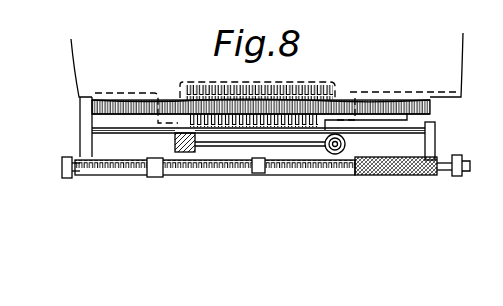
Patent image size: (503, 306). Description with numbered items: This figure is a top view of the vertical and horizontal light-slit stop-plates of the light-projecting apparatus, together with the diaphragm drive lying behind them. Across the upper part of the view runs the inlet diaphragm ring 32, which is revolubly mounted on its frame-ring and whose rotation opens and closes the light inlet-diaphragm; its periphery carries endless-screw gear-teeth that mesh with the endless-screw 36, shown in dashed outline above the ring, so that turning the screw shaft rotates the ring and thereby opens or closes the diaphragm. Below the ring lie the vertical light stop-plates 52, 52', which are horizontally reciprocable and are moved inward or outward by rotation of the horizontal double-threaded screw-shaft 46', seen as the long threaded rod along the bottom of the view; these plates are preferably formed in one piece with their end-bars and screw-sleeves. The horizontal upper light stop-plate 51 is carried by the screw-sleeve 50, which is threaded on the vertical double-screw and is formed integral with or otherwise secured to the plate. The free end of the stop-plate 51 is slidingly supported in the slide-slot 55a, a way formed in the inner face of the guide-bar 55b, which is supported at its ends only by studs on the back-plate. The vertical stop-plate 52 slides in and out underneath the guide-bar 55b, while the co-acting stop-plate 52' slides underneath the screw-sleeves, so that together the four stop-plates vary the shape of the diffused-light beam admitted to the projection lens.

The inlet diaphragm ring 32 is at (92, 113).
The endless-screw 36 is at (285, 90).
The vertical light stop-plate 52 is at (133, 142).
The vertical light stop-plate 52' is at (310, 143).
The guide-bar 55b is at (173, 140).
The horizontal upper light stop-plate 51 is at (248, 148).
The screw-sleeve 50 is at (335, 155).
The double-threaded screw-shaft 46' is at (266, 177).
The slide-slot 55a is at (197, 150).